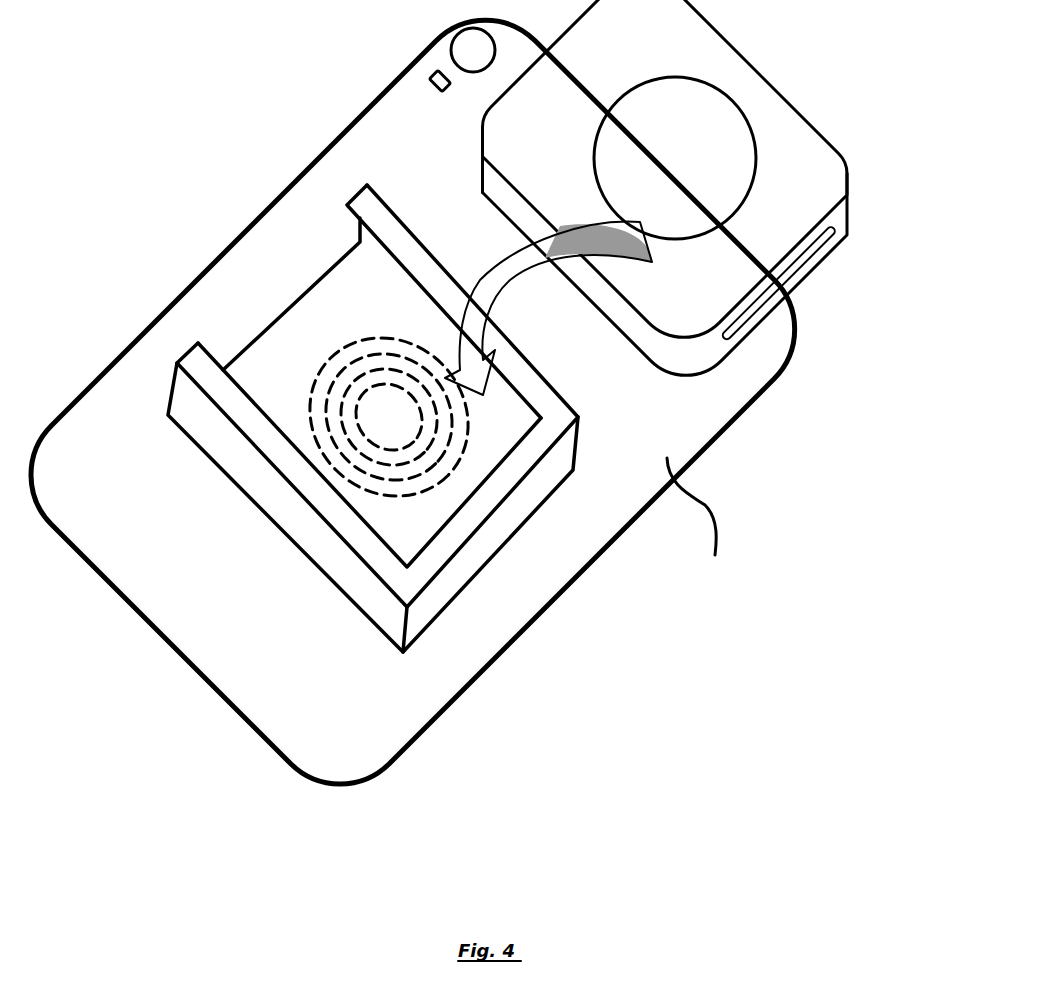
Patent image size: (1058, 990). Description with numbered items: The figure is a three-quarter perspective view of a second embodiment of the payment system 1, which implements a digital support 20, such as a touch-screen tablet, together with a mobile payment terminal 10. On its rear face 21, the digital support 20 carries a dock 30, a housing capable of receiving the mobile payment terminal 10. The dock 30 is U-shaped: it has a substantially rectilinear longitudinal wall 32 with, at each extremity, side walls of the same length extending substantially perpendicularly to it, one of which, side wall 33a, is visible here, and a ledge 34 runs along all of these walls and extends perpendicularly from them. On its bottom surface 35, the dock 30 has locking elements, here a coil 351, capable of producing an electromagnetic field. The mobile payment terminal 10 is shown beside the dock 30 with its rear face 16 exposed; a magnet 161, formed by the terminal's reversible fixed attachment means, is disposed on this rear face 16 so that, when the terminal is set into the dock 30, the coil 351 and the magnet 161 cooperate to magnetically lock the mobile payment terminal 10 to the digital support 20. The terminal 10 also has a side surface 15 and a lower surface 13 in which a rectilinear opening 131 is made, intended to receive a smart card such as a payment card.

The payment system 1 is at (206, 157).
The mobile payment terminal 10 is at (630, 187).
The lower surface 13 is at (837, 226).
The rectilinear opening 131 is at (793, 272).
The side surface 15 is at (520, 200).
The rear face 16 is at (697, 48).
The magnet 161 is at (697, 137).
The digital support 20 is at (162, 572).
The rear face 21 is at (696, 521).
The dock 30 is at (363, 489).
The longitudinal wall 32 is at (468, 563).
The side wall 33a is at (302, 528).
The ledge 34 is at (523, 458).
The bottom surface 35 is at (347, 300).
The coil 351 is at (317, 388).